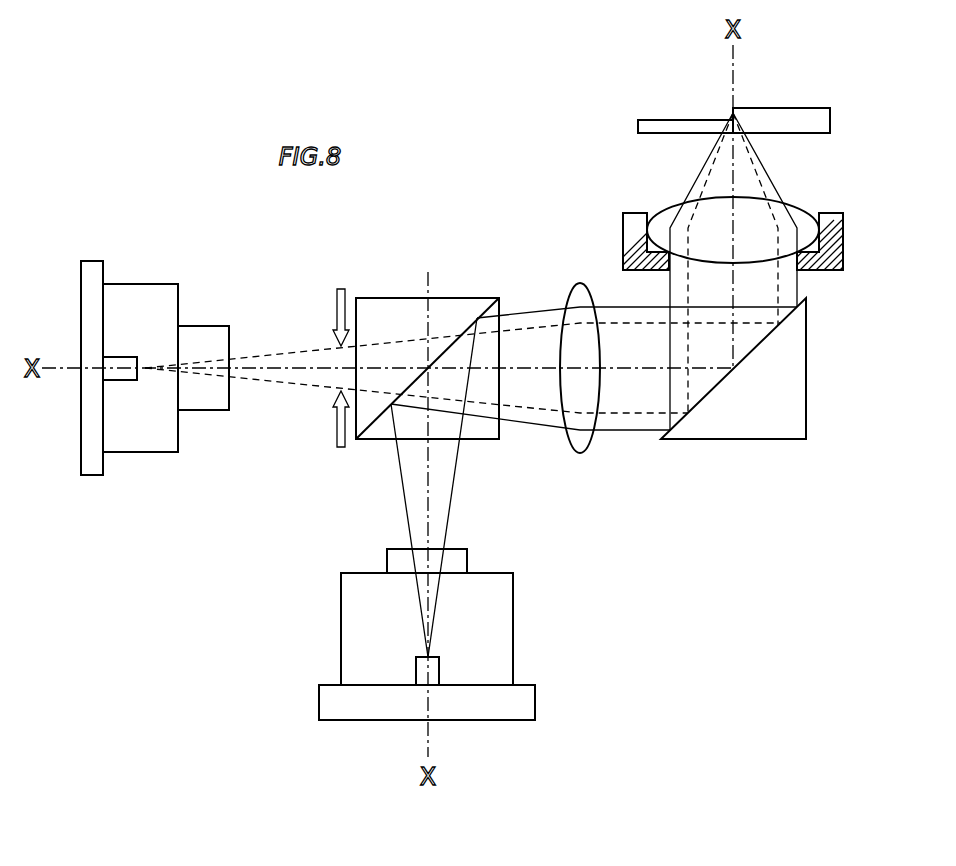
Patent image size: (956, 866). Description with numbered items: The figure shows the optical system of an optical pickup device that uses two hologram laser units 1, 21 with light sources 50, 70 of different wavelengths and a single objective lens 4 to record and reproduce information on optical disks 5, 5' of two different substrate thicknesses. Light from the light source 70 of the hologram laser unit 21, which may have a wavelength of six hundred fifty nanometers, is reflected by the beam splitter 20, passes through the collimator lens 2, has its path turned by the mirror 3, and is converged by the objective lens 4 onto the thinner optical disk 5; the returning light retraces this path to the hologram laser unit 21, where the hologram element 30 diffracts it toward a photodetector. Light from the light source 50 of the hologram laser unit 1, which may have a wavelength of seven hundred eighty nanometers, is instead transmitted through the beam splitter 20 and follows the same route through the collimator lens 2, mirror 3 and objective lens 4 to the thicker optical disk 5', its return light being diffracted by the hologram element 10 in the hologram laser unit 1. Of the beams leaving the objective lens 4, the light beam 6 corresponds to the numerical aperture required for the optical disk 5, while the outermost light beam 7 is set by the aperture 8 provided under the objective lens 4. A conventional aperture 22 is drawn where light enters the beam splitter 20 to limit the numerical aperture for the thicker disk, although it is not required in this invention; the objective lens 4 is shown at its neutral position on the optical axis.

The hologram laser unit 1 is at (152, 291).
The light source 50 is at (118, 355).
The hologram element 10 is at (205, 411).
The aperture 22 is at (341, 286).
The beam splitter 20 is at (380, 303).
The collimator lens 2 is at (571, 301).
The mirror 3 is at (742, 424).
The objective lens 4 is at (758, 222).
The aperture 8 is at (833, 232).
The optical disk 5 is at (661, 106).
The optical disk 5' is at (788, 90).
The light beam 7 is at (768, 172).
The light beam 6 is at (695, 184).
The hologram laser unit 21 is at (353, 634).
The hologram element 30 is at (395, 560).
The light source 70 is at (440, 672).